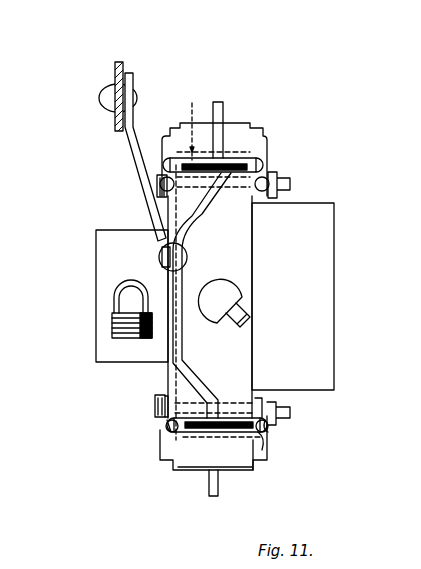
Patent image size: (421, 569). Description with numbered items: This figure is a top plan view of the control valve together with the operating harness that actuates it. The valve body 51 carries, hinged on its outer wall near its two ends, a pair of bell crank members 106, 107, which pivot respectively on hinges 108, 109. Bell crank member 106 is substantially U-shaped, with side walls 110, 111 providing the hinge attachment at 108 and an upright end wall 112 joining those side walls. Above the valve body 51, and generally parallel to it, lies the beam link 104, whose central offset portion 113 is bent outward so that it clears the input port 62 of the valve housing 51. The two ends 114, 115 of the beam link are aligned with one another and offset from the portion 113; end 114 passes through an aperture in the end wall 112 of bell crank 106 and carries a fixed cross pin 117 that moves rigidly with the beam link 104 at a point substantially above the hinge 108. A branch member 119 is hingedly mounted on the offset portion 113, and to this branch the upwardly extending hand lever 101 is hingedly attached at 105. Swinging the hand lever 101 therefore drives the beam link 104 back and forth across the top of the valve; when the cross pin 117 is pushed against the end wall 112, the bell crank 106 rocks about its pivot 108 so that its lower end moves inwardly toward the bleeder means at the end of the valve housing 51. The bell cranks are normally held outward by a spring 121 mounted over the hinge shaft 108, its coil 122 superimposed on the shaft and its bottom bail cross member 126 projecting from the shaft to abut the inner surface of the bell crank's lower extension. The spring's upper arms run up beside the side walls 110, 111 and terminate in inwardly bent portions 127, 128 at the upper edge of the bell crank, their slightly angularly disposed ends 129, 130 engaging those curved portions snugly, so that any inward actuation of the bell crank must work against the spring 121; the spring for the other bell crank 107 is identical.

The valve body 51 is at (334, 282).
The input port 62 is at (222, 297).
The hand lever 101 is at (123, 63).
The beam link 104 is at (183, 241).
The hinge mounting of beam link to hand lever 105 is at (100, 100).
The bell crank member 106 is at (158, 459).
The bell crank member 107 is at (276, 146).
The hinge 108 is at (292, 412).
The hinge 109 is at (291, 184).
The side wall 110 is at (154, 405).
The side wall 111 is at (268, 420).
The end wall 112 is at (258, 456).
The offset portion 113 is at (160, 280).
The beam link end 114 is at (212, 494).
The beam link end 115 is at (222, 103).
The cross pin 117 is at (228, 432).
The branch member 119 is at (134, 152).
The spring 121 is at (247, 147).
The spring coil 122 is at (172, 412).
The bail cross member 126 is at (248, 485).
The inwardly bent portion 127 is at (163, 416).
The inwardly bent portion 128 is at (258, 394).
The angularly disposed spring end 129 is at (168, 430).
The angularly disposed spring end 130 is at (265, 441).